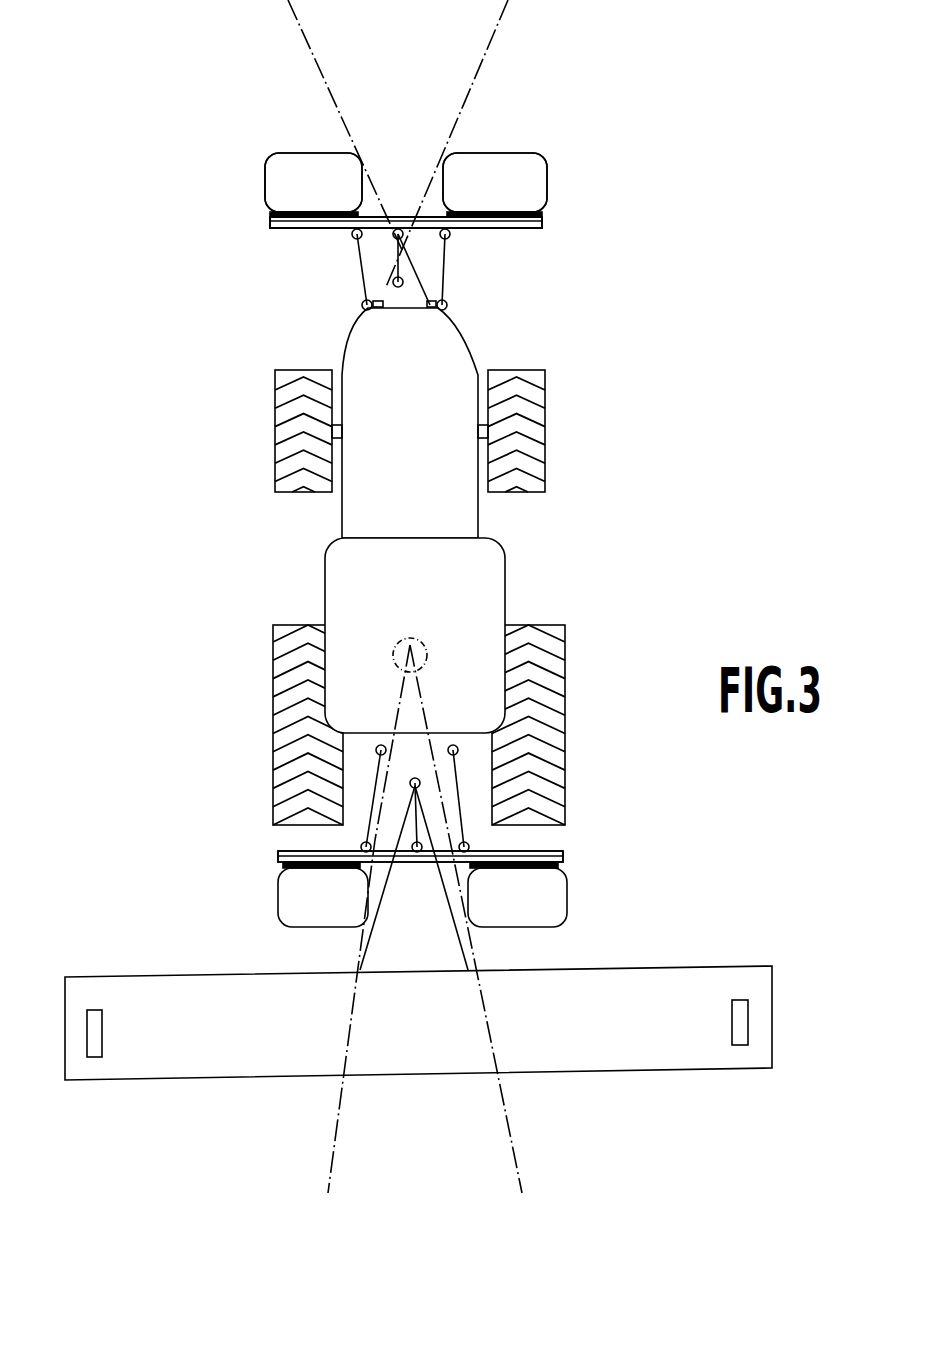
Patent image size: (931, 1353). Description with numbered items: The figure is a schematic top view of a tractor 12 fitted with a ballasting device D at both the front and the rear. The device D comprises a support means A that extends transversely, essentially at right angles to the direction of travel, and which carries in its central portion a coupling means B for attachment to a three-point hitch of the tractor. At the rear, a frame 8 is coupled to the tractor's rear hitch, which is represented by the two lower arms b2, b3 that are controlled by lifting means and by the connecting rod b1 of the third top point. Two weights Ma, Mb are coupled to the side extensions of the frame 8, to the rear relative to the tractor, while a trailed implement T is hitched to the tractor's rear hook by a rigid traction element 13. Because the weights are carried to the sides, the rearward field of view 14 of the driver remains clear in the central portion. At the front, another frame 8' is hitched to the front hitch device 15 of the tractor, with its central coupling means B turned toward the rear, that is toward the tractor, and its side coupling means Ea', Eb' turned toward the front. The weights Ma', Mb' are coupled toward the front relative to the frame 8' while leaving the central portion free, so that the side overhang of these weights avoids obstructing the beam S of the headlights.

The beam of the headlights S is at (418, 25).
The device D is at (281, 250).
The weight Ma' is at (278, 151).
The weight Mb' is at (520, 151).
The side coupling means Ea' is at (269, 215).
The side coupling means Eb' is at (546, 212).
The frame 8' is at (406, 260).
The front hitch device 15 is at (456, 271).
The coupling means B is at (422, 238).
The support means A is at (541, 239).
The tractor 12 is at (508, 548).
The rearward field of view 14 is at (440, 1157).
The arm b2 is at (372, 766).
The arm b3 is at (455, 772).
The connecting rod b1 is at (418, 825).
The rigid traction element 13 is at (427, 945).
The frame 8 is at (448, 852).
The weight Ma is at (282, 897).
The weight Mb is at (554, 897).
The trailed implement T is at (233, 1053).